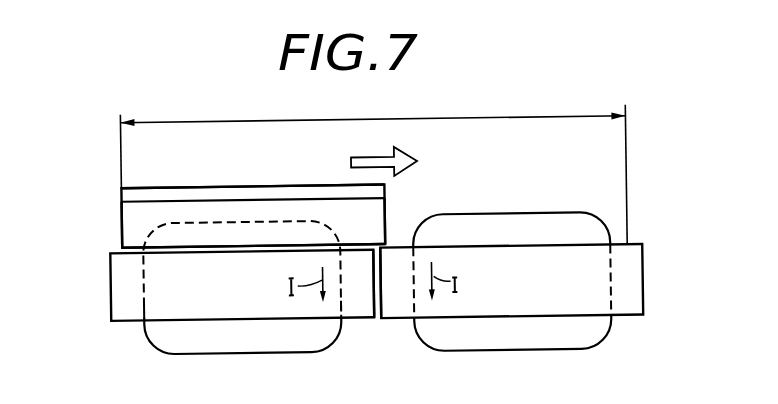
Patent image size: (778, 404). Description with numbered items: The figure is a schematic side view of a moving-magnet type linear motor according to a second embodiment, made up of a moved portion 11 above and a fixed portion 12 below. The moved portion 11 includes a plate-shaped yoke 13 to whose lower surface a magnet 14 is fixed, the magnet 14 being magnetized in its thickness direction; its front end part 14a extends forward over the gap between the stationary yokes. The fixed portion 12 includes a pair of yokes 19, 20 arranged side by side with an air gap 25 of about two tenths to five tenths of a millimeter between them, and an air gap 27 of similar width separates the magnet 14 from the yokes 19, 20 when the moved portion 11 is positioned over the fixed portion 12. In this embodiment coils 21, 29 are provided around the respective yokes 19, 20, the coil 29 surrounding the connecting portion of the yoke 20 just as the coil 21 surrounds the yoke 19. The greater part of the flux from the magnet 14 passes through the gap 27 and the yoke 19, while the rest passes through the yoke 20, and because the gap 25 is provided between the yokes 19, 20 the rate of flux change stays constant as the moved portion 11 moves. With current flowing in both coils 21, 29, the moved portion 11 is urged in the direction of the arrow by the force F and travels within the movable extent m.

The moved portion 11 is at (96, 208).
The fixed portion 12 is at (96, 294).
The yoke 13 is at (168, 187).
The magnet 14 is at (130, 232).
The front end part 14a is at (372, 213).
The yoke 19 is at (135, 302).
The yoke 20 is at (623, 308).
The coil 21 is at (242, 350).
The air gap 25 is at (376, 318).
The air gap 27 is at (358, 252).
The coil 29 is at (497, 352).
The movable extent m is at (380, 119).
The force F is at (367, 152).